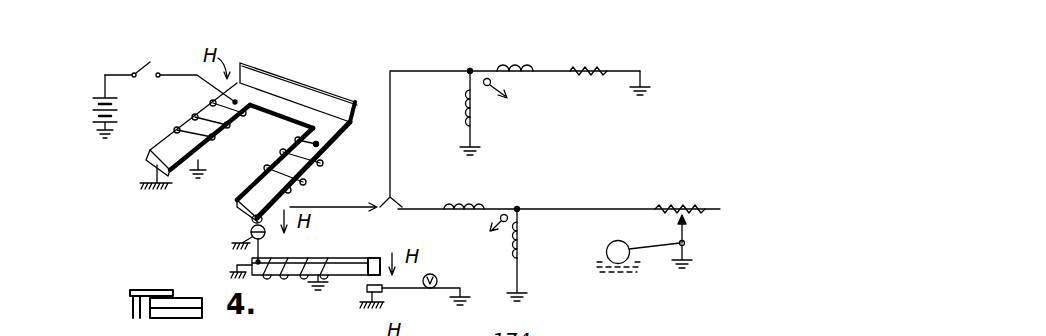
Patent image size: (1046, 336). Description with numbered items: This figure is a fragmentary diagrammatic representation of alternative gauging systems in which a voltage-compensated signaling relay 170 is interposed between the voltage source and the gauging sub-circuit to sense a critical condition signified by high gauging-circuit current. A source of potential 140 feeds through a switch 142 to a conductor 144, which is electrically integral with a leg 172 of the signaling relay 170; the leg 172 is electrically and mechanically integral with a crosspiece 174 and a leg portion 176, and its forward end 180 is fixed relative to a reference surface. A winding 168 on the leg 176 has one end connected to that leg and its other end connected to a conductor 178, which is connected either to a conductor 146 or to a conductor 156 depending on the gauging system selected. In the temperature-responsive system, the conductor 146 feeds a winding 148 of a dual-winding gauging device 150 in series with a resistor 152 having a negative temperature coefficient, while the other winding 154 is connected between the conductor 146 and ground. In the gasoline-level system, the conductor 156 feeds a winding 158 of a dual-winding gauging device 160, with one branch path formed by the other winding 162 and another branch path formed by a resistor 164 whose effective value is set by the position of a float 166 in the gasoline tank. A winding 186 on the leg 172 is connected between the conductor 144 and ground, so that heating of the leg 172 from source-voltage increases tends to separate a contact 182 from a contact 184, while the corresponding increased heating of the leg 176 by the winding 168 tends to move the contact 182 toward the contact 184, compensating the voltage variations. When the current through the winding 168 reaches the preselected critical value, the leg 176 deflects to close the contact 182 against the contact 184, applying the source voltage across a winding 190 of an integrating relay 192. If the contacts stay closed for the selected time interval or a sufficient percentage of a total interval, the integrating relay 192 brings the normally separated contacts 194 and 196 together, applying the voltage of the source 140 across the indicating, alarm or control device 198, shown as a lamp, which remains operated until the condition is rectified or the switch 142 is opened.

The source of potential 140 is at (93, 103).
The switch 142 is at (147, 60).
The conductor 144 is at (172, 68).
The conductor 146 is at (437, 70).
The winding 148 is at (513, 68).
The gauging device 150 is at (517, 86).
The resistor 152 is at (593, 78).
The winding 154 is at (478, 117).
The conductor 156 is at (420, 205).
The winding 158 is at (470, 200).
The gauging device 160 is at (487, 221).
The winding 162 is at (523, 238).
The resistor 164 is at (677, 212).
The float 166 is at (645, 228).
The winding 168 is at (330, 158).
The signaling relay 170 is at (330, 70).
The leg 172 is at (172, 137).
The crosspiece 174 is at (282, 108).
The leg portion 176 is at (330, 137).
The conductor 178 is at (290, 205).
The forward end 180 is at (147, 153).
The contact 182 is at (245, 215).
The contact 184 is at (250, 232).
The winding 186 is at (210, 103).
The winding 190 is at (333, 220).
The integrating relay 192 is at (351, 253).
The contact 194 is at (363, 277).
The contact 196 is at (365, 293).
The indicating, alarm or control device 198 is at (437, 275).